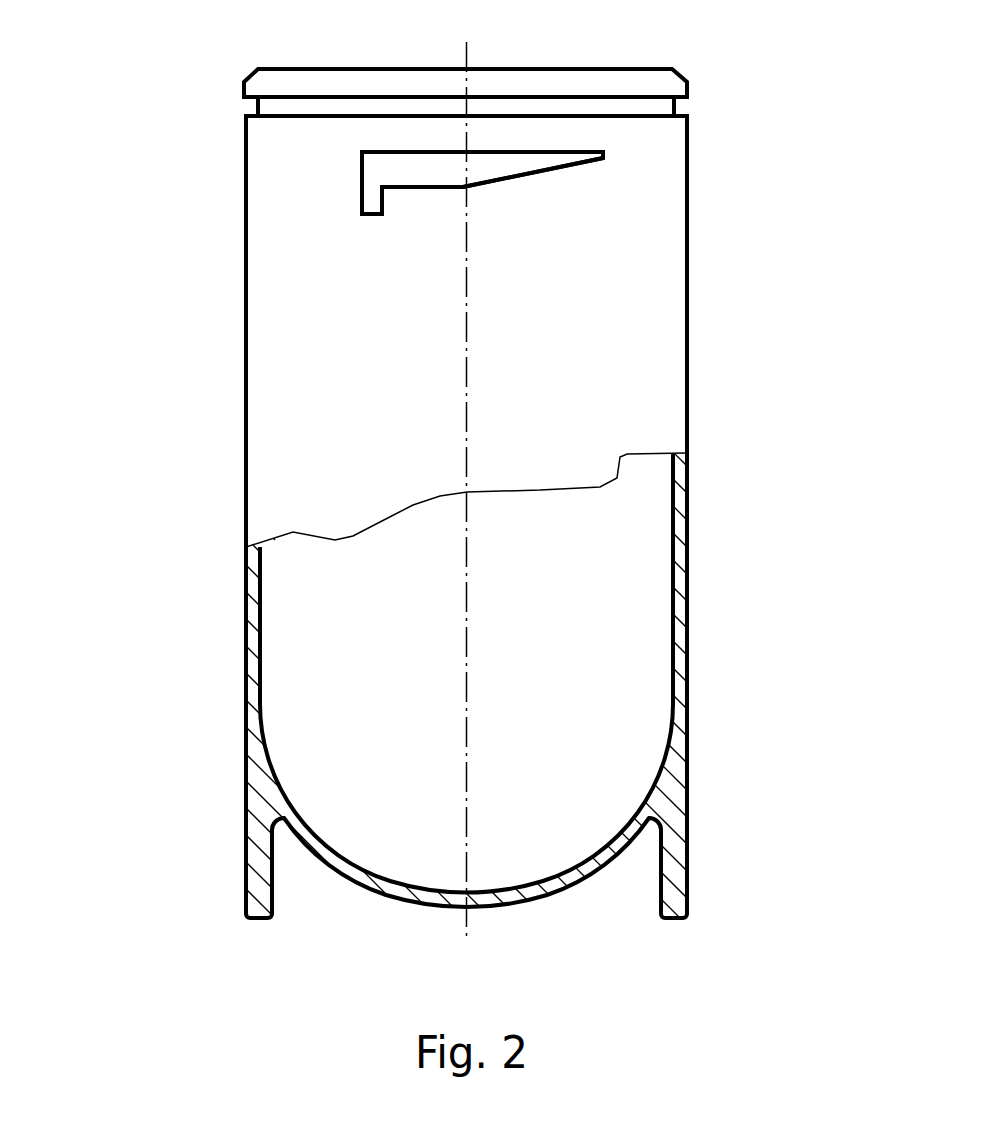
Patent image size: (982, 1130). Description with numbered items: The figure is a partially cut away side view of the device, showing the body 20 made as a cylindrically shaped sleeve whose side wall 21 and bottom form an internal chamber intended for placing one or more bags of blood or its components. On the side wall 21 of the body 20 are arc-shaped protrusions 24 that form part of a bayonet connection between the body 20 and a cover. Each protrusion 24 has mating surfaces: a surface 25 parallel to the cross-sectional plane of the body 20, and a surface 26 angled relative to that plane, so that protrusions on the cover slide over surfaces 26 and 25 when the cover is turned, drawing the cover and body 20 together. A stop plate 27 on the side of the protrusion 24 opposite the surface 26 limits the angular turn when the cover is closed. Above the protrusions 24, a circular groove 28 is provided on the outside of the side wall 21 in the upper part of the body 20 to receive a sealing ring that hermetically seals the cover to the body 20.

The body 20 is at (491, 477).
The side wall 21 is at (263, 513).
The arc-shaped protrusions 24 is at (466, 200).
The surface 25 is at (420, 188).
The surface 26 is at (537, 173).
The stop plate 27 is at (373, 205).
The circular groove 28 is at (684, 103).